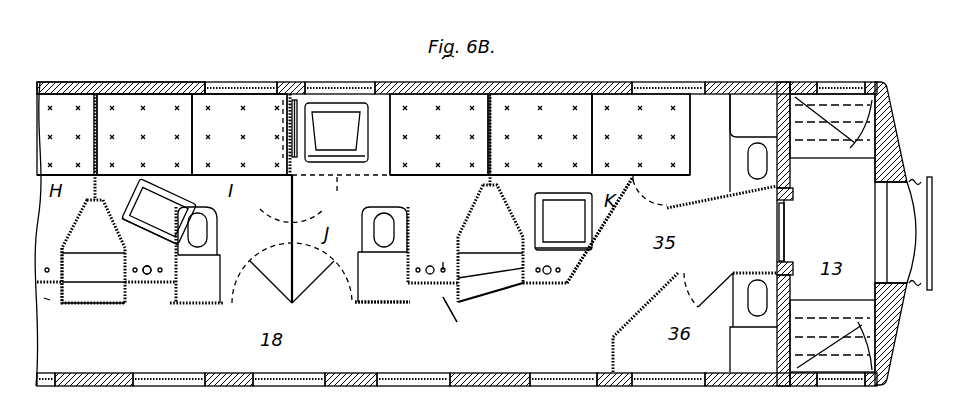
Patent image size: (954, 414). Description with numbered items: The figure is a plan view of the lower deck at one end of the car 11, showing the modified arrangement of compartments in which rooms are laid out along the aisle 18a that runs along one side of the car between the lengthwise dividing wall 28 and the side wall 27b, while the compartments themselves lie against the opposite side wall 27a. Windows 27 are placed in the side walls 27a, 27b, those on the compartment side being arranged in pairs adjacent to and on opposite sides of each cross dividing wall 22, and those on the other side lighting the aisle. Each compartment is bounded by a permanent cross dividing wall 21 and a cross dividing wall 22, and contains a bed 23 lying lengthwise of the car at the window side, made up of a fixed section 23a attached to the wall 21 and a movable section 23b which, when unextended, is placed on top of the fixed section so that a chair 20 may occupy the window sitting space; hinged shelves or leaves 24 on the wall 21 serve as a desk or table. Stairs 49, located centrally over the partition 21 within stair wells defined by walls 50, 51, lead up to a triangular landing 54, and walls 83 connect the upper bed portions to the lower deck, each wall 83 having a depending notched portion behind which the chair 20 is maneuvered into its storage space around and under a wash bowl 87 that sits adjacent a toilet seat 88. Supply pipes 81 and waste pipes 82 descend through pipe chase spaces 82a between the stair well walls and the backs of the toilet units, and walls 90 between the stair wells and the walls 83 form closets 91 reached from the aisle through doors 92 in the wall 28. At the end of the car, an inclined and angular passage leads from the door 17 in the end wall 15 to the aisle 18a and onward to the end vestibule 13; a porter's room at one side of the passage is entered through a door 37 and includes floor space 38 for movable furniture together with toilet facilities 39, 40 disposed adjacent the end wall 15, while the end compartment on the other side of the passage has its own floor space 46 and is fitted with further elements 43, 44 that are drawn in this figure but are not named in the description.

The car 11 is at (911, 124).
The end vestibule 13 is at (861, 233).
The end wall 15 is at (794, 179).
The door 17 is at (787, 233).
The aisle 18a is at (47, 298).
The chair 20 is at (357, 176).
The cross dividing wall 21 is at (92, 137).
The cross dividing wall 22 is at (294, 266).
The bed 23 is at (179, 95).
The fixed section 23a is at (144, 134).
The movable section 23b is at (340, 153).
The shelves or leaves 24 is at (292, 119).
The window 27 is at (243, 82).
The side wall 27a is at (88, 82).
The side wall 27b is at (355, 373).
The lengthwise dividing wall 28 is at (380, 305).
The door 37 is at (718, 285).
The floor space 38 is at (611, 341).
The toilet facilities 39 is at (753, 349).
The toilet facilities 40 is at (760, 301).
The wall 43 is at (577, 270).
The locker 44 is at (753, 115).
The floor space 46 is at (733, 147).
The stairs 49 is at (97, 305).
The wall 50 is at (62, 242).
The wall 51 is at (143, 268).
The landing 54 is at (93, 251).
The supply pipes 81 is at (133, 271).
The waste pipes 82 is at (150, 285).
The pipe chase spaces 82a is at (405, 283).
The wall 83 is at (410, 233).
The wash bowl 87 is at (218, 223).
The toilet seat 88 is at (290, 255).
The walls 90 is at (433, 258).
The closets 91 is at (452, 310).
The doors 92 is at (450, 322).